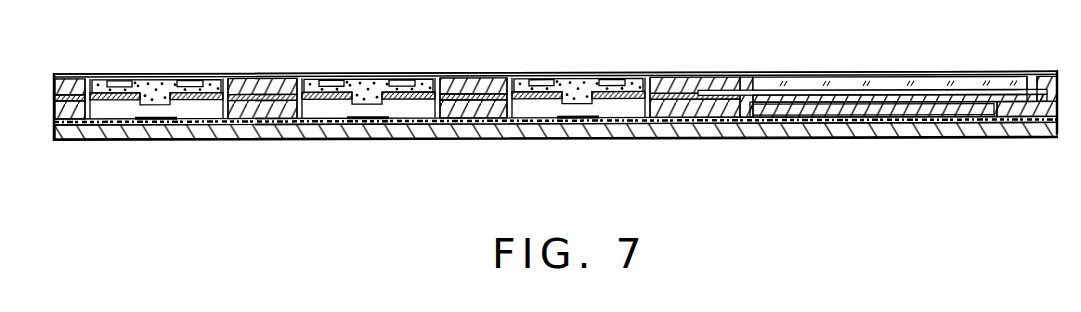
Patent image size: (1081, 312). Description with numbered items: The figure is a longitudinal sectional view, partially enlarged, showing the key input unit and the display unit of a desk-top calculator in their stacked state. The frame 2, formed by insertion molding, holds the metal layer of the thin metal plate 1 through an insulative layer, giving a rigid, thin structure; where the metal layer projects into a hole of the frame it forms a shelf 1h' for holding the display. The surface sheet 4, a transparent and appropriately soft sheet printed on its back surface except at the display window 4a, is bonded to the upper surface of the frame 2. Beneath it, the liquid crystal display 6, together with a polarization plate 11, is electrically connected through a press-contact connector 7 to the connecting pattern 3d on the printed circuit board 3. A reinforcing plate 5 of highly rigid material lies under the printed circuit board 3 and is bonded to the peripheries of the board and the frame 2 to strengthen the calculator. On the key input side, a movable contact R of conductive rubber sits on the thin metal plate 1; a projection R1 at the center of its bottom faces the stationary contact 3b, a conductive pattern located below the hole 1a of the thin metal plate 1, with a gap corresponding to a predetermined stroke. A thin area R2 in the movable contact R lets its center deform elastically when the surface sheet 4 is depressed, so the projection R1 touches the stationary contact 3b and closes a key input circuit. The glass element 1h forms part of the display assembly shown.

The thin metal plate 1 is at (482, 82).
The hole of the thin metal plate 1a is at (447, 137).
The upper glass plate 1h is at (890, 53).
The shelf for holding the display 1h' is at (873, 150).
The frame 2 is at (263, 82).
The printed circuit board 3 is at (305, 125).
The stationary contact 3b is at (366, 156).
The connecting pattern 3d is at (1000, 126).
The surface sheet 4 is at (700, 75).
The display window 4a is at (860, 73).
The reinforcing plate 5 is at (685, 133).
The liquid crystal display 6 is at (878, 113).
The press-contact connector 7 is at (1013, 120).
The polarization plate 11 is at (903, 82).
The movable contact R is at (368, 61).
The projection R1 is at (408, 144).
The thin area R2 is at (385, 52).